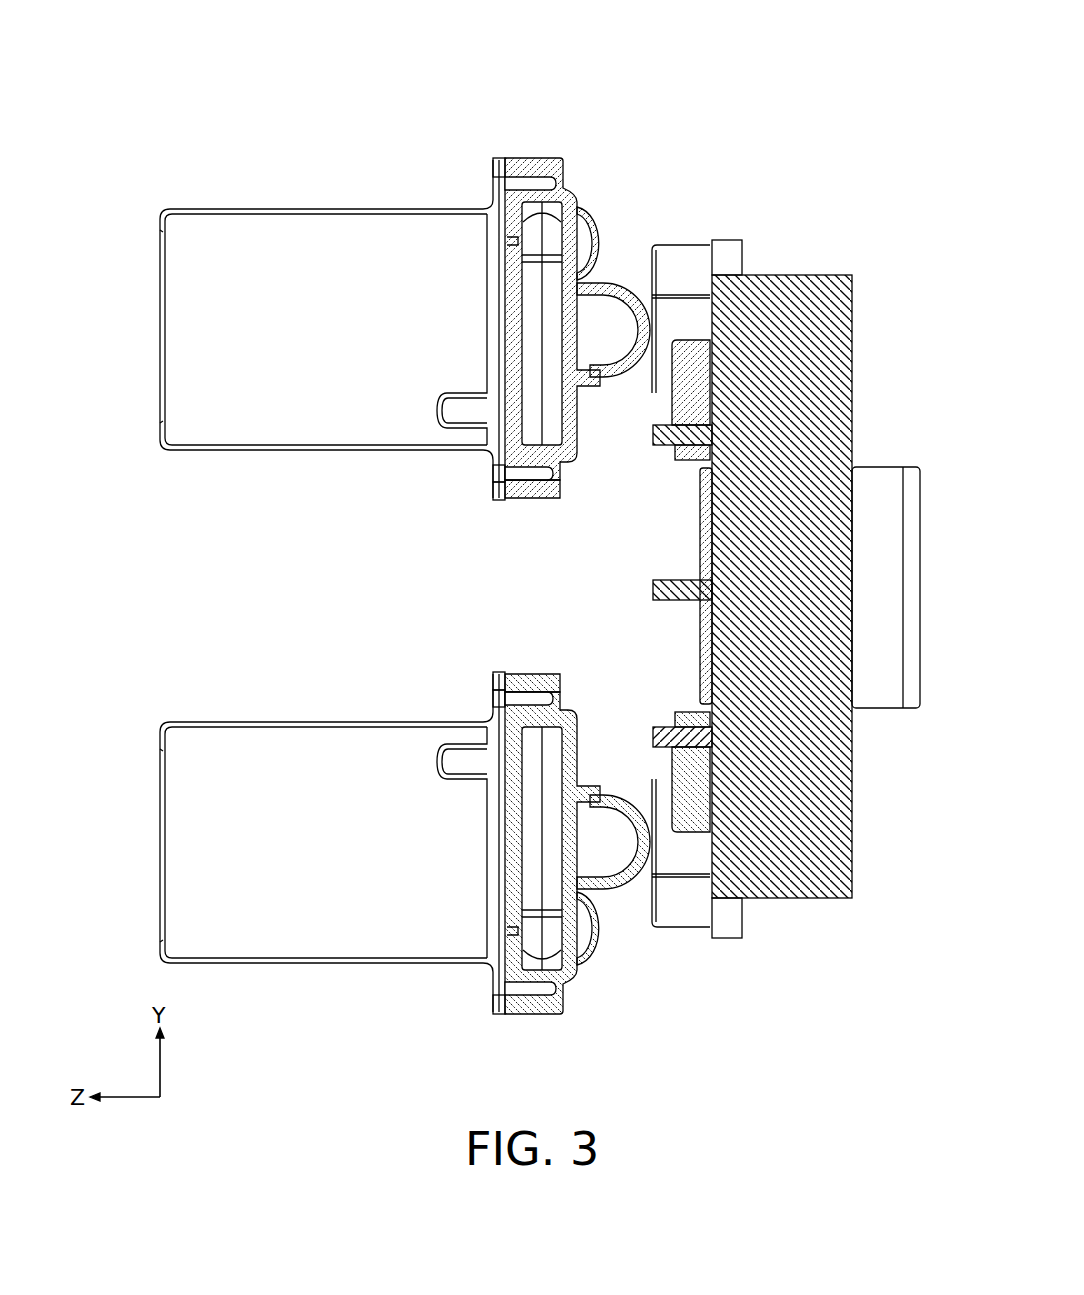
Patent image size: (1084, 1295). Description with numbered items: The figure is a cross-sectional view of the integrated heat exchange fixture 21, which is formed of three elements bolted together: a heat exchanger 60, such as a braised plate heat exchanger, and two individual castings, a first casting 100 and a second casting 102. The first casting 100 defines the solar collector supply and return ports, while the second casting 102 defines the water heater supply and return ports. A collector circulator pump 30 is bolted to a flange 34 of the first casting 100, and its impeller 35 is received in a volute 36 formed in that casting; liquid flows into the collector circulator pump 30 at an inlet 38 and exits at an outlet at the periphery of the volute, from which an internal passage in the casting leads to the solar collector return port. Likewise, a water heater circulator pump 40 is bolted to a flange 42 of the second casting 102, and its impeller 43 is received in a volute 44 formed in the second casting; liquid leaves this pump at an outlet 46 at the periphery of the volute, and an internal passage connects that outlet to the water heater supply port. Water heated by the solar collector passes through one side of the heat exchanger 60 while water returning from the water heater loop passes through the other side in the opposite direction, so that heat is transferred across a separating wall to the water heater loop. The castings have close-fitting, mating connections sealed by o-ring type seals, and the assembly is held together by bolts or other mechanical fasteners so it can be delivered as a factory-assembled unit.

The heat exchange fixture 21 is at (262, 60).
The first casting 100 is at (435, 341).
The second casting 102 is at (439, 866).
The collector circulator pump 30 is at (233, 222).
The water heater circulator pump 40 is at (233, 742).
The outlet 46 is at (585, 165).
The volute 36 is at (550, 730).
The volute 44 is at (552, 228).
The inlet 38 is at (645, 983).
The impeller 43 is at (552, 330).
The impeller 35 is at (550, 795).
The flange 42 is at (525, 500).
The flange 34 is at (528, 1013).
The heat exchanger 60 is at (853, 780).